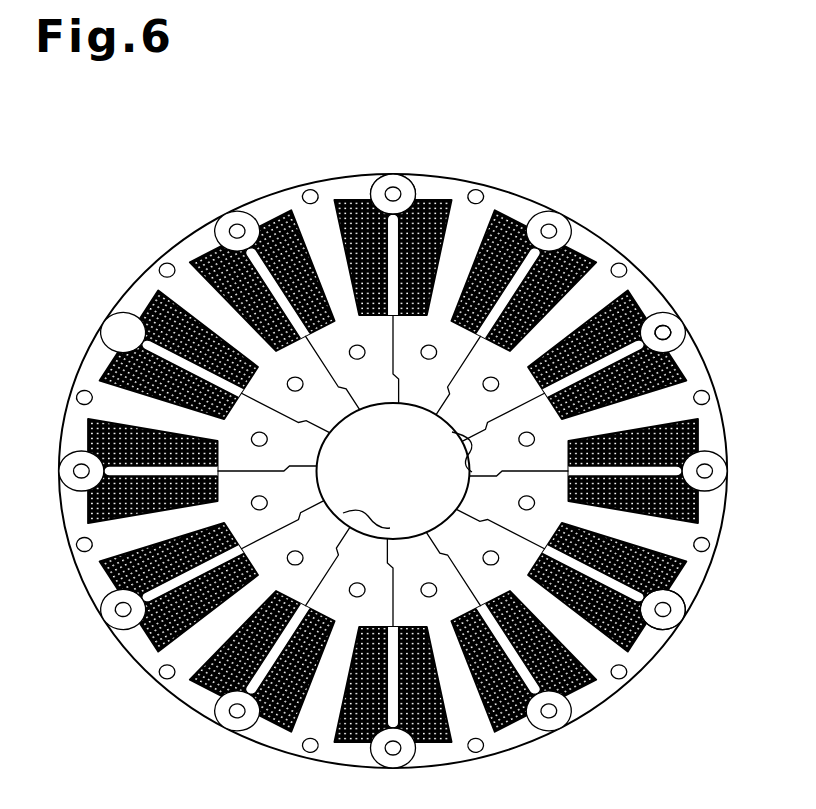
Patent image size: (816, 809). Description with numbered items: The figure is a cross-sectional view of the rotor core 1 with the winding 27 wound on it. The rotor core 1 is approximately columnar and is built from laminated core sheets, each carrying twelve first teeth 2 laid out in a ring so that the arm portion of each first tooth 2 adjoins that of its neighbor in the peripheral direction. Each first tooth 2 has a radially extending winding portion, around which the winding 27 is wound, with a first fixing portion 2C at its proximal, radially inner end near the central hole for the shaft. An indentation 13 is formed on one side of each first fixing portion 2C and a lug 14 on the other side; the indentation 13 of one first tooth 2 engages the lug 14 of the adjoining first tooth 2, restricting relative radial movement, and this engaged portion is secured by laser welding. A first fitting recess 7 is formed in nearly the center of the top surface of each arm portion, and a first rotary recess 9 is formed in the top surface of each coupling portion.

The rotor core 1 is at (611, 144).
The first tooth 2 is at (394, 467).
The first fixing portion 2C is at (377, 404).
The first fitting recess 7 is at (712, 560).
The first rotary recess 9 is at (709, 362).
The indentation 13 is at (462, 466).
The lug 14 is at (372, 526).
The winding 27 is at (400, 177).